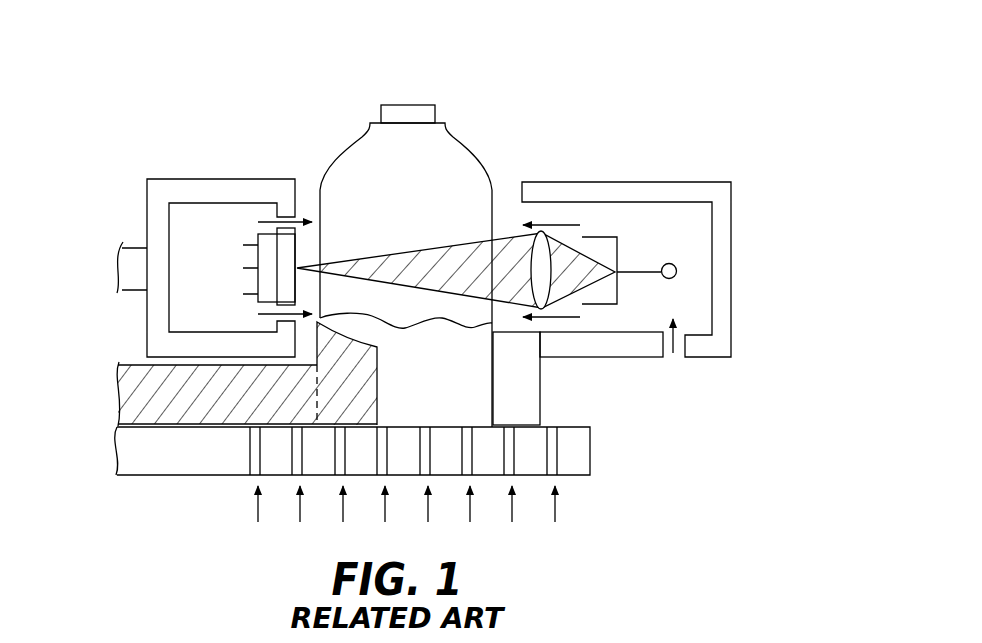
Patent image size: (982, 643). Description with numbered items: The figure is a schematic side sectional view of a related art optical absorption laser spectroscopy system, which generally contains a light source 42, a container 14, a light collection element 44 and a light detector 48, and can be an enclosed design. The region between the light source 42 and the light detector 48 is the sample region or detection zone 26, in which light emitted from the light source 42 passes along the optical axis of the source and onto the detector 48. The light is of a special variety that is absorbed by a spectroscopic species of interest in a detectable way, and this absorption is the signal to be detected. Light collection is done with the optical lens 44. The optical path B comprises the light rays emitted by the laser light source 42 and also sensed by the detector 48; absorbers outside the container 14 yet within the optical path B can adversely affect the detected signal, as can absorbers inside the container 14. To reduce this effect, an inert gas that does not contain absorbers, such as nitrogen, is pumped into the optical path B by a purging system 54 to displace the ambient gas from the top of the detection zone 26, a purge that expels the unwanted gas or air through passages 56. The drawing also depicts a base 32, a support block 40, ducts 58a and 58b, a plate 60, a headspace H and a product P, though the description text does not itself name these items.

The container 14 is at (402, 231).
The detection zone 26 is at (345, 101).
The conveyor 32 is at (130, 398).
The support block 40 is at (532, 390).
The light source 42 is at (267, 248).
The light collection element 44 is at (558, 252).
The light detector 48 is at (643, 267).
The purging system 54 is at (440, 233).
The passages 56 is at (312, 222).
The first duct 58a is at (157, 323).
The second duct 58b is at (720, 197).
The air plate 60 is at (575, 452).
The optical path B is at (407, 265).
The headspace H is at (352, 197).
The product P is at (470, 408).